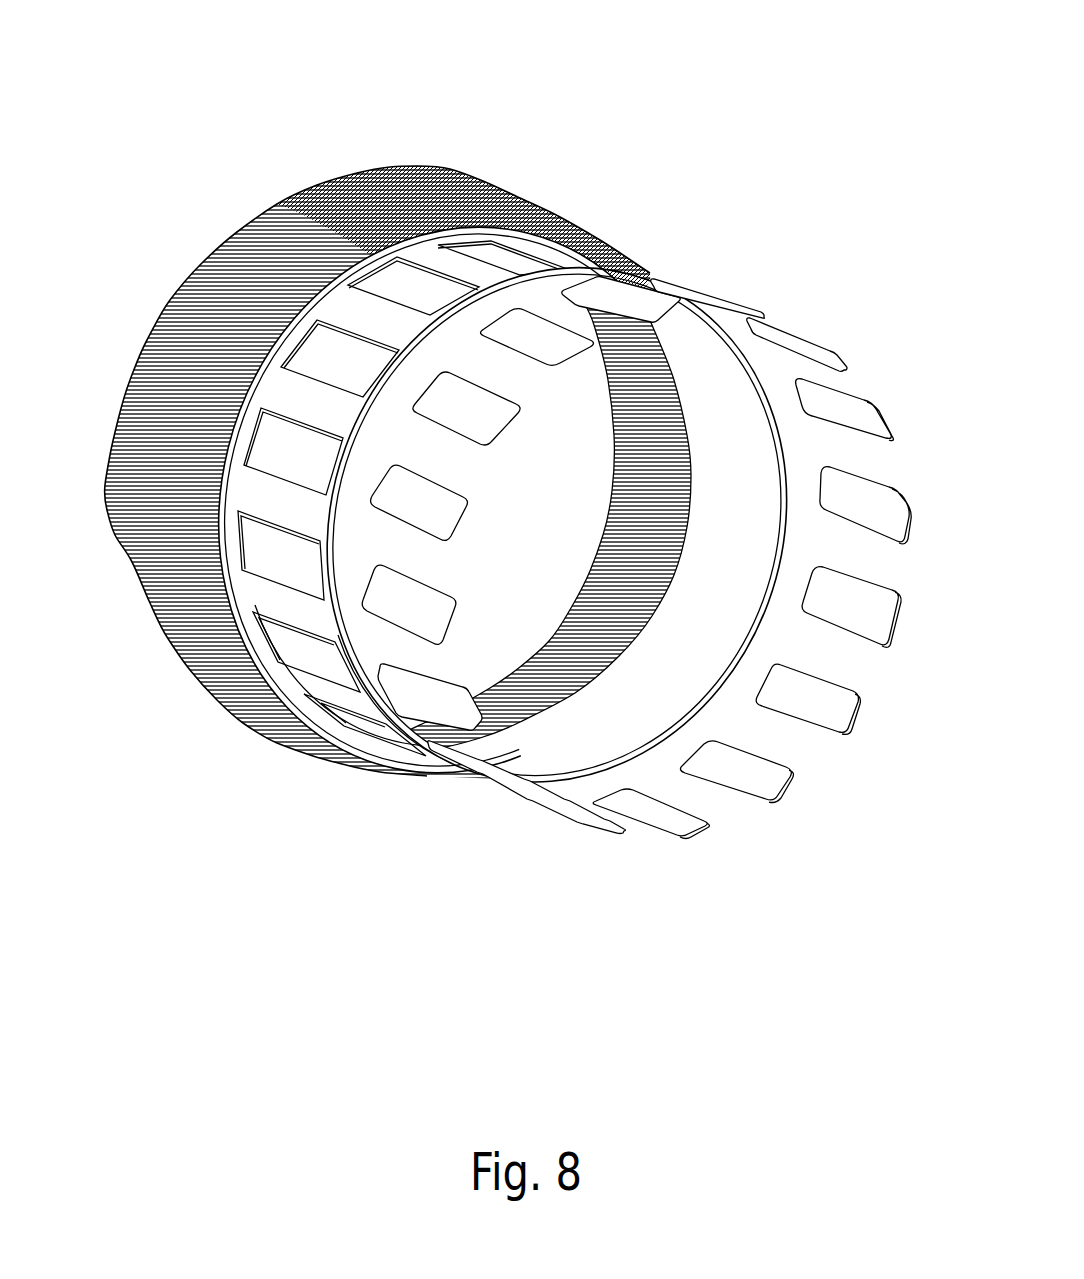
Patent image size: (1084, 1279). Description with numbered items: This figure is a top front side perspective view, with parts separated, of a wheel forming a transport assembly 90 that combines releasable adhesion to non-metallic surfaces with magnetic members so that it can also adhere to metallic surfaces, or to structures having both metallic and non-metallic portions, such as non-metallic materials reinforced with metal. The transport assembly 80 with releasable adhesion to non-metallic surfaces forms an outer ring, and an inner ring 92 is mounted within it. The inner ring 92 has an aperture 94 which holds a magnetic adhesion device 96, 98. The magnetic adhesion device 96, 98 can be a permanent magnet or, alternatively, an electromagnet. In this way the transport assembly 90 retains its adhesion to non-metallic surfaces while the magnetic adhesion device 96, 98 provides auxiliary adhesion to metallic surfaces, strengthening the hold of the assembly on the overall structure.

The transport assembly 90 is at (312, 90).
The transport assembly 80 is at (153, 320).
The inner ring 92 is at (502, 516).
The aperture 94 is at (303, 448).
The magnetic adhesion device 96 is at (470, 513).
The magnetic adhesion device 98 is at (890, 523).